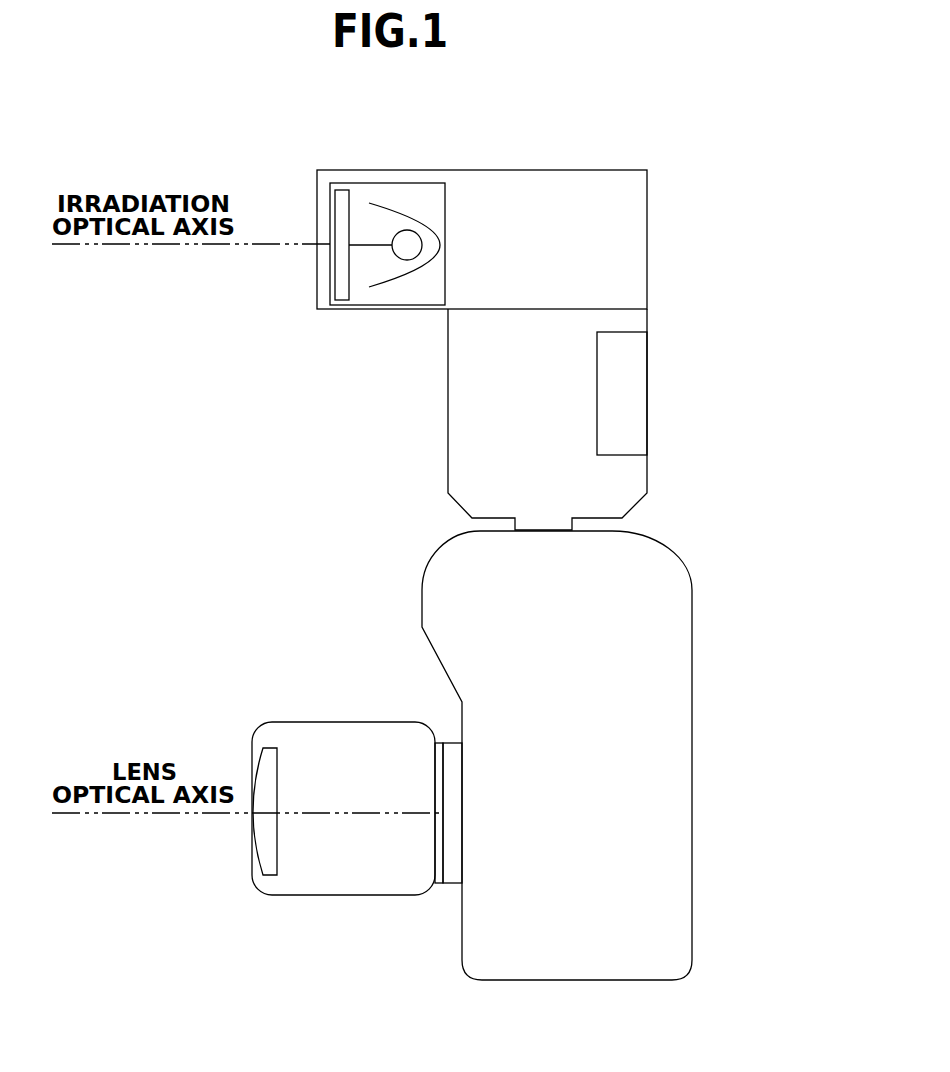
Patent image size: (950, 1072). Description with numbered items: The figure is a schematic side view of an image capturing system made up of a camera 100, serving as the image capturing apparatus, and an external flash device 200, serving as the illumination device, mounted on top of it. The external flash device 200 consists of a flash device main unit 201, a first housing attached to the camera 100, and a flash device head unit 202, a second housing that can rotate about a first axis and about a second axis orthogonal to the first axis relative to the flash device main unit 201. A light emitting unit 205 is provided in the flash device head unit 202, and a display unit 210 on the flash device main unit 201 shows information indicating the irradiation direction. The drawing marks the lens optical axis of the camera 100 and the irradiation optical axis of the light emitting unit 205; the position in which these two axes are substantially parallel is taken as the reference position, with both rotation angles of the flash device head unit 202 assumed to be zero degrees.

The camera 100 is at (422, 600).
The external flash device 200 is at (667, 134).
The flash device main unit 201 is at (448, 380).
The flash device head unit 202 is at (649, 197).
The light emitting unit 205 is at (424, 222).
The display unit 210 is at (625, 455).